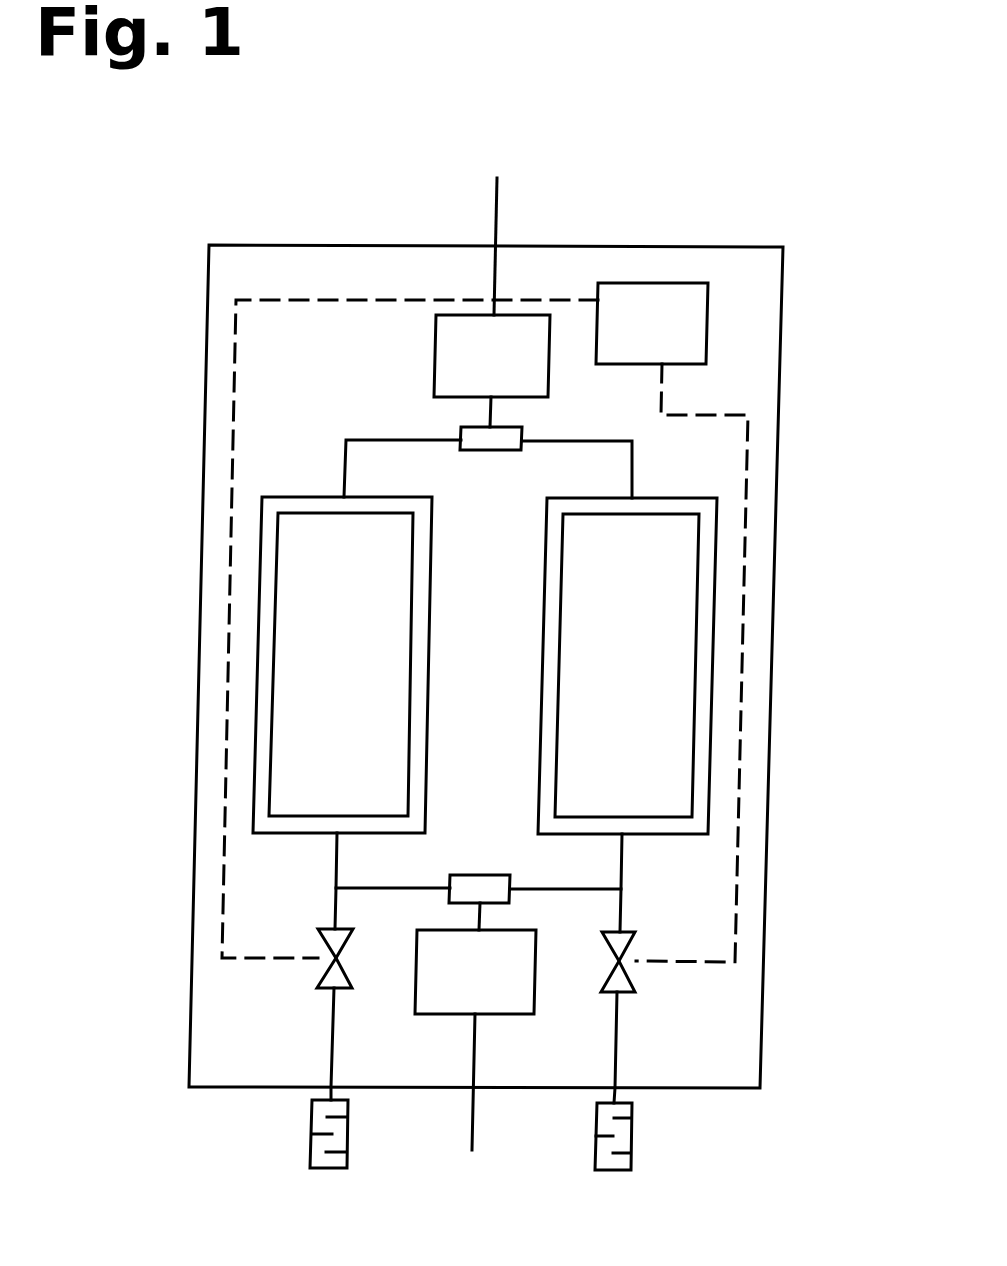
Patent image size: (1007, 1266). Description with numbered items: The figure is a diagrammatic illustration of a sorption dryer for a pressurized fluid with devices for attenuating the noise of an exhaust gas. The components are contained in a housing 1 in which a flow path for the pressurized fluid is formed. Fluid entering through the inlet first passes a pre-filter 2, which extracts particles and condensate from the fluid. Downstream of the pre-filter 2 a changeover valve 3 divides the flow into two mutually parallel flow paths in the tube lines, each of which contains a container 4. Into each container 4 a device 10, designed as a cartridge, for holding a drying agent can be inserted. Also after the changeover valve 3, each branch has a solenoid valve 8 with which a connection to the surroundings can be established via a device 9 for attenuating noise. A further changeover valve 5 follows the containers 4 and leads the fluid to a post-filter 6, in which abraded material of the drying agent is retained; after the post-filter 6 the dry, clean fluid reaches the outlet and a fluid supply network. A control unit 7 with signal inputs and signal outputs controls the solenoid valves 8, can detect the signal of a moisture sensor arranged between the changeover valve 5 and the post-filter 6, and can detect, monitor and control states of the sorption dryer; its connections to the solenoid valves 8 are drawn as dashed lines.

The housing 1 is at (698, 247).
The pre-filter 2 is at (537, 987).
The changeover valve 3 is at (467, 875).
The container 4 is at (257, 665).
The changeover valve 5 is at (460, 427).
The post-filter 6 is at (435, 357).
The control unit 7 is at (708, 323).
The solenoid valve 8 is at (327, 972).
The device for attenuating noise 9 is at (348, 1135).
The device for holding a drying agent 10 is at (272, 710).